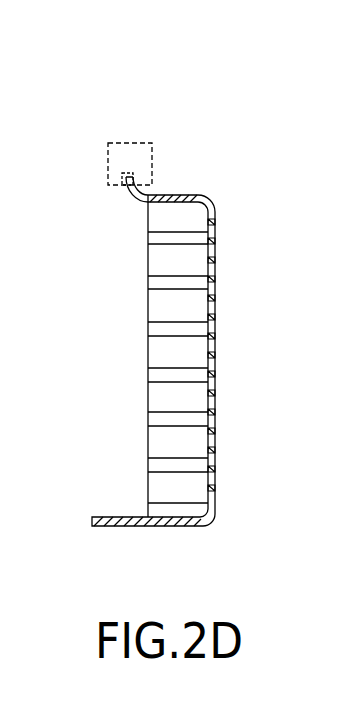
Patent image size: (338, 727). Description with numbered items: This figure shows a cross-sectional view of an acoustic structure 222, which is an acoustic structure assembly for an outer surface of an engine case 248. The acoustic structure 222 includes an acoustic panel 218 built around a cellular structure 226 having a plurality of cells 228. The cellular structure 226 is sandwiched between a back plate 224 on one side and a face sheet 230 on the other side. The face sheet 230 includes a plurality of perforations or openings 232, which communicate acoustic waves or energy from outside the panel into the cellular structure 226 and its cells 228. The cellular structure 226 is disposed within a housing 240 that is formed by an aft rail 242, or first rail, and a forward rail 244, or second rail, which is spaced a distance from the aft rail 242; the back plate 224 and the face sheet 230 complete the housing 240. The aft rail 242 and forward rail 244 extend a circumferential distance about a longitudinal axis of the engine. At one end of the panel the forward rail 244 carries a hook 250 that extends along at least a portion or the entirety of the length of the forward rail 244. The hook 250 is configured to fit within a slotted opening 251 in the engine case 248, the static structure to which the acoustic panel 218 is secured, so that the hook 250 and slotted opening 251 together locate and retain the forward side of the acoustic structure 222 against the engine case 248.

The acoustic structure 222 is at (89, 161).
The back plate 224 is at (149, 347).
The cellular structure 226 is at (156, 303).
The cells 228 is at (156, 255).
The acoustic panel 218 is at (217, 203).
The face sheet 230 is at (217, 330).
The openings 232 is at (217, 378).
The housing 240 is at (217, 502).
The aft rail 242 is at (191, 528).
The forward rail 244 is at (188, 196).
The engine case 248 is at (121, 143).
The hook 250 is at (133, 177).
The slotted opening 251 is at (124, 184).